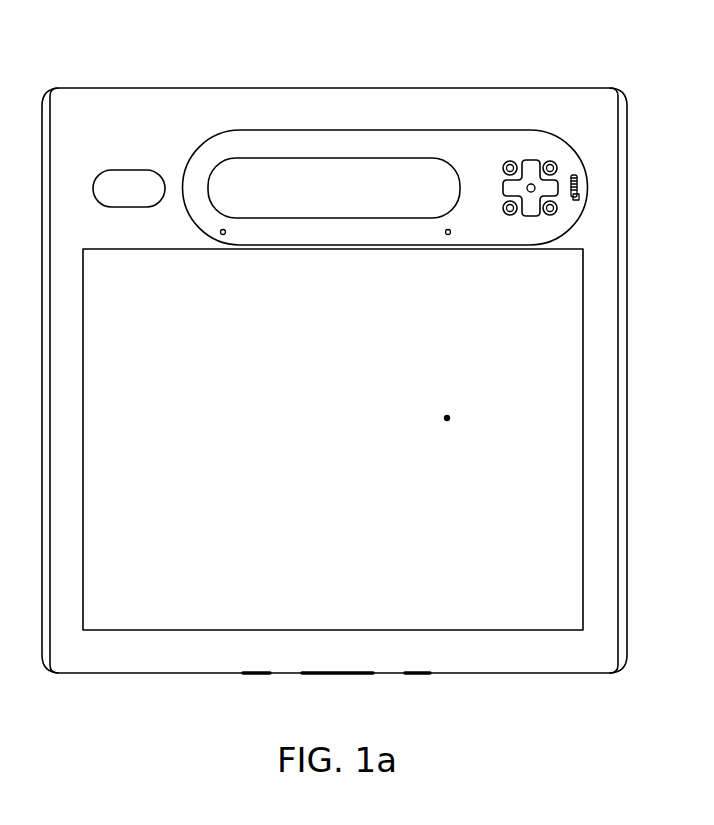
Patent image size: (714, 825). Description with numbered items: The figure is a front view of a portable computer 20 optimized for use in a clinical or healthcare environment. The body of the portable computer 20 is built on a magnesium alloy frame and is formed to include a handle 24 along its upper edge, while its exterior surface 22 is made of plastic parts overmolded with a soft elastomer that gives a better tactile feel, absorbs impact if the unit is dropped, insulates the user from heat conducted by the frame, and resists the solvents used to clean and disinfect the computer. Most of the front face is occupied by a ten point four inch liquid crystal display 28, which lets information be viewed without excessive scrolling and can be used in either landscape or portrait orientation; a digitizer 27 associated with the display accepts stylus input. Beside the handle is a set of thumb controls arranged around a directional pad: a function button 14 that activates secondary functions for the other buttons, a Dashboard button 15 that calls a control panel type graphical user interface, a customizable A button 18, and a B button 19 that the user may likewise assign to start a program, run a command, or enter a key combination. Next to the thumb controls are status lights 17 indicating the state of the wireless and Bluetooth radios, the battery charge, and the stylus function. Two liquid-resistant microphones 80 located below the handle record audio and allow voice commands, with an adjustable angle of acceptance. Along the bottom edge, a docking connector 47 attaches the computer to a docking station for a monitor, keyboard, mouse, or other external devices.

The portable computer 20 is at (326, 88).
The exterior surface 22 is at (605, 627).
The handle 24 is at (268, 158).
The liquid crystal display 28 is at (583, 532).
The function button 14 is at (510, 161).
The Dashboard button 15 is at (557, 165).
The status lights 17 is at (580, 188).
The A button 18 is at (556, 212).
The B button 19 is at (510, 215).
The microphones 80 is at (223, 235).
The digitizer 27 is at (450, 418).
The docking connector 47 is at (363, 674).